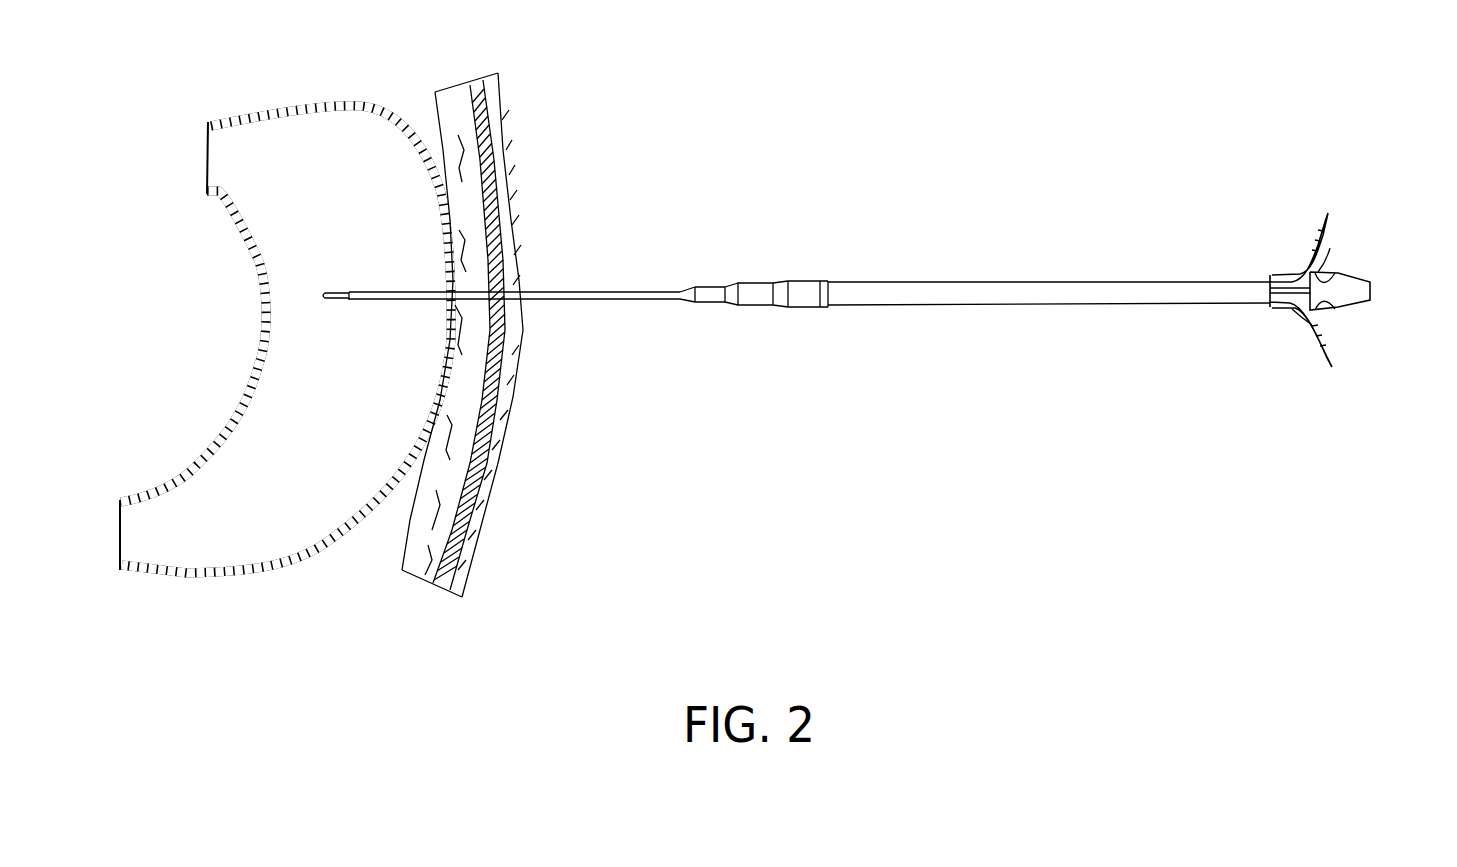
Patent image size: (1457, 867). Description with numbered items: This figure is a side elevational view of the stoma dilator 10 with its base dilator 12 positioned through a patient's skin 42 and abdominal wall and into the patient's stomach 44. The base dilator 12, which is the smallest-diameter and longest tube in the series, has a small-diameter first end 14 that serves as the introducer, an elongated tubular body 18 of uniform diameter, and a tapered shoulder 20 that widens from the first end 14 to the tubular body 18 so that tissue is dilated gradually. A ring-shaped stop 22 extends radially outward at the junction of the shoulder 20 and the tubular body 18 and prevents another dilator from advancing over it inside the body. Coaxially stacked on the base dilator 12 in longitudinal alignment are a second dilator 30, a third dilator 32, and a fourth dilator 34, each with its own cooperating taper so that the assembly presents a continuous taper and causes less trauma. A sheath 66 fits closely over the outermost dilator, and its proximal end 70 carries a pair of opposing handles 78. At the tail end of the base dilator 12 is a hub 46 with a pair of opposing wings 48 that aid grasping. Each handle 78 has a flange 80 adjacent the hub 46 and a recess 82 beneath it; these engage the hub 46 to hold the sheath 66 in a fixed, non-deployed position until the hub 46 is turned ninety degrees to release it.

The stoma dilator 10 is at (897, 140).
The base dilator 12 is at (604, 287).
The first end 14 is at (323, 292).
The elongated tubular body 18 is at (567, 300).
The tapered shoulder 20 is at (338, 292).
The stop 22 is at (348, 302).
The second dilator 30 is at (710, 287).
The third dilator 32 is at (753, 306).
The fourth dilator 34 is at (800, 282).
The patient's skin 42 is at (525, 242).
The patient's stomach 44 is at (372, 148).
The hub 46 is at (1373, 290).
The wings 48 is at (1343, 272).
The sheath 66 is at (1100, 290).
The proximal end 70 is at (1288, 270).
The handles 78 is at (1323, 213).
The flange 80 is at (1340, 263).
The recess 82 is at (1307, 317).